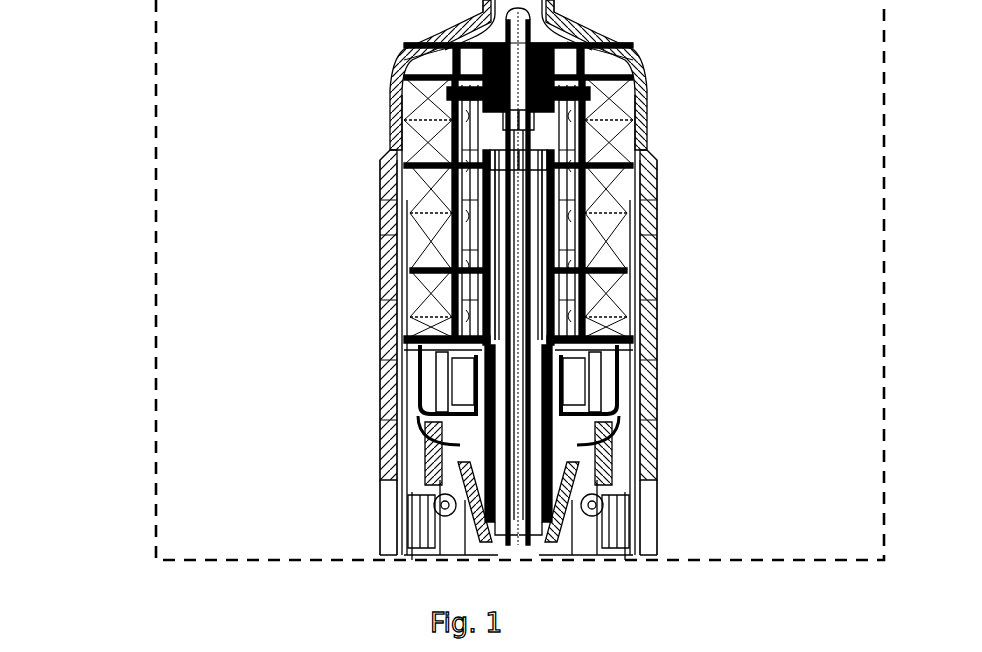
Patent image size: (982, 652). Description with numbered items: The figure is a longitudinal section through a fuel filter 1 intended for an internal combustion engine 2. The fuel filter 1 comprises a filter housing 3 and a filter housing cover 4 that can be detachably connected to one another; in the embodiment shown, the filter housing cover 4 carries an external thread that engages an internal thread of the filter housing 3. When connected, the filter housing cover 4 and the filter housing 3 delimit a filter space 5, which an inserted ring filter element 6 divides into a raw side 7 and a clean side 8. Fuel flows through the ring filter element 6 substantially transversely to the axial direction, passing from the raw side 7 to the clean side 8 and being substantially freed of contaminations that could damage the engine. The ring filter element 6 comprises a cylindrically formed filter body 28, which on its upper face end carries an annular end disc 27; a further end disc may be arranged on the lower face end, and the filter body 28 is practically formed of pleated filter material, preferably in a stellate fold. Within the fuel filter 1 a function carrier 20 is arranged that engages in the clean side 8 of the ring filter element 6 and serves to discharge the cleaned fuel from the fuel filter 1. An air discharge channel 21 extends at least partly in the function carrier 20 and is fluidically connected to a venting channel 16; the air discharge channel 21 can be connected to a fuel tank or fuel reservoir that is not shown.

The fuel filter 1 is at (300, 22).
The internal combustion engine 2 is at (151, 23).
The filter housing 3 is at (383, 222).
The filter housing cover 4 is at (392, 90).
The venting channel 16 is at (408, 48).
The filter space 5 is at (597, 219).
The ring filter element 6 is at (594, 83).
The raw side 7 is at (634, 118).
The clean side 8 is at (574, 182).
The annular end disc 27 is at (636, 62).
The filter body 28 is at (605, 90).
The function carrier 20 is at (528, 297).
The air discharge channel 21 is at (504, 282).